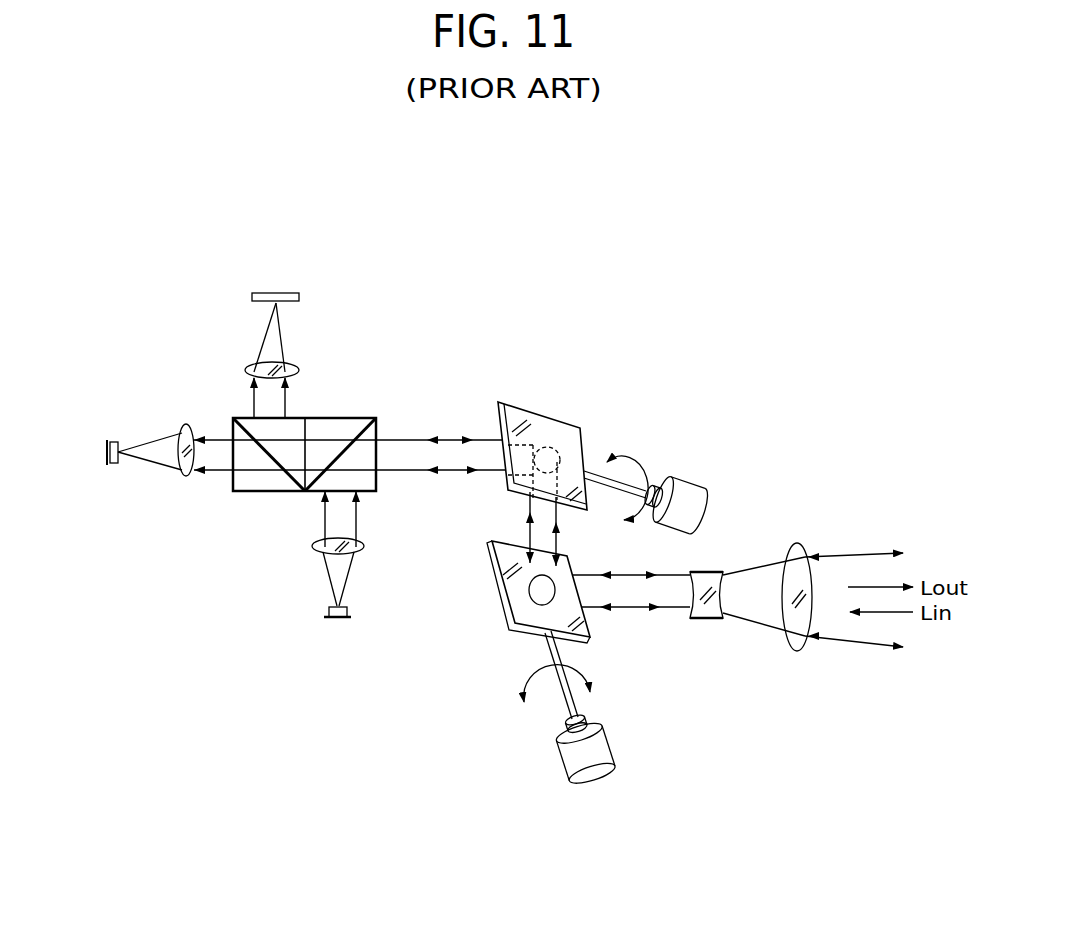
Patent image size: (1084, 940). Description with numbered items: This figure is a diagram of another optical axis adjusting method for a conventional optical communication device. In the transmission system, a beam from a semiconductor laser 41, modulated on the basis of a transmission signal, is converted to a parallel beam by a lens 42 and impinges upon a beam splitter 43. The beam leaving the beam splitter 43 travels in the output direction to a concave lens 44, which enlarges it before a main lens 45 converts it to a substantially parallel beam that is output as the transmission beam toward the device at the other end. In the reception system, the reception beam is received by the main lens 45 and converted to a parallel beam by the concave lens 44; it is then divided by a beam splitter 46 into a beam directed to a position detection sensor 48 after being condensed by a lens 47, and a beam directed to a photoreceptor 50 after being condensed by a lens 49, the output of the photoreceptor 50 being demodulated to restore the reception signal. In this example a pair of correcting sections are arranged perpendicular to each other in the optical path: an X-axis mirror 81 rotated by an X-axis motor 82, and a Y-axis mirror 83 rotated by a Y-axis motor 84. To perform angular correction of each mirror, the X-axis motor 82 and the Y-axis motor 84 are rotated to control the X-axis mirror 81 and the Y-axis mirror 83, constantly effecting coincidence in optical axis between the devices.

The semiconductor laser 41 is at (336, 620).
The lens 42 is at (365, 546).
The beam splitter 43 is at (343, 418).
The concave lens 44 is at (712, 620).
The main lens 45 is at (800, 543).
The beam splitter 46 is at (252, 492).
The lens 47 is at (252, 366).
The position detection sensor 48 is at (283, 292).
The lens 49 is at (182, 432).
The photoreceptor 50 is at (114, 466).
The X-axis mirror 81 is at (515, 408).
The X-axis motor 82 is at (690, 480).
The Y-axis mirror 83 is at (498, 597).
The Y-axis motor 84 is at (612, 752).